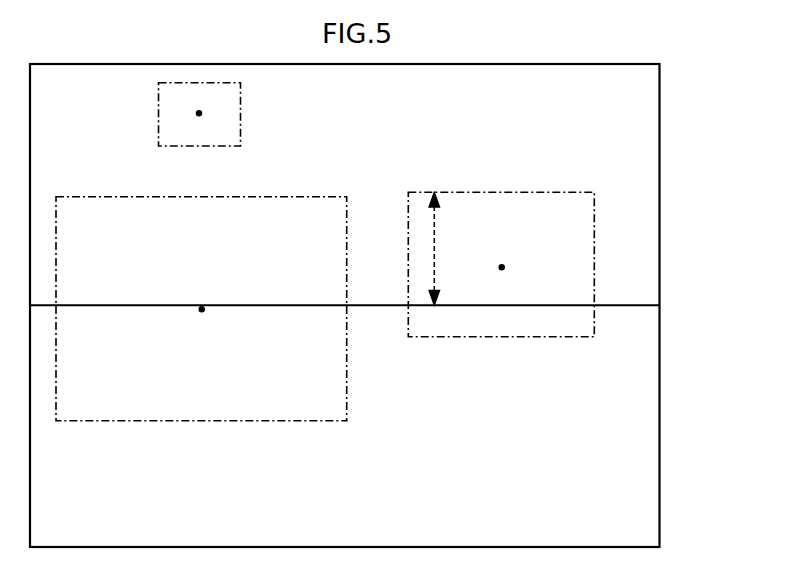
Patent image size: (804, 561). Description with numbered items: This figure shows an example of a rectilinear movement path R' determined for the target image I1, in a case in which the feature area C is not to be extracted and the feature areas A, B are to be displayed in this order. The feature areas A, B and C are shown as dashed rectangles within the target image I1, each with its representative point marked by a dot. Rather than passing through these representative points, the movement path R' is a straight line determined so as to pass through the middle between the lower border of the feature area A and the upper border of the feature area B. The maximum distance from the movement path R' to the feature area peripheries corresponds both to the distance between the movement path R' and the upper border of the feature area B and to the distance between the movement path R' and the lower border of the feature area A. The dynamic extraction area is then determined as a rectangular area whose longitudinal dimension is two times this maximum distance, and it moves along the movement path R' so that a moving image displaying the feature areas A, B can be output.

The target image I1 is at (660, 512).
The rectilinear movement path R' is at (345, 277).
The feature area C is at (158, 118).
The feature area A is at (302, 422).
The feature area B is at (566, 192).